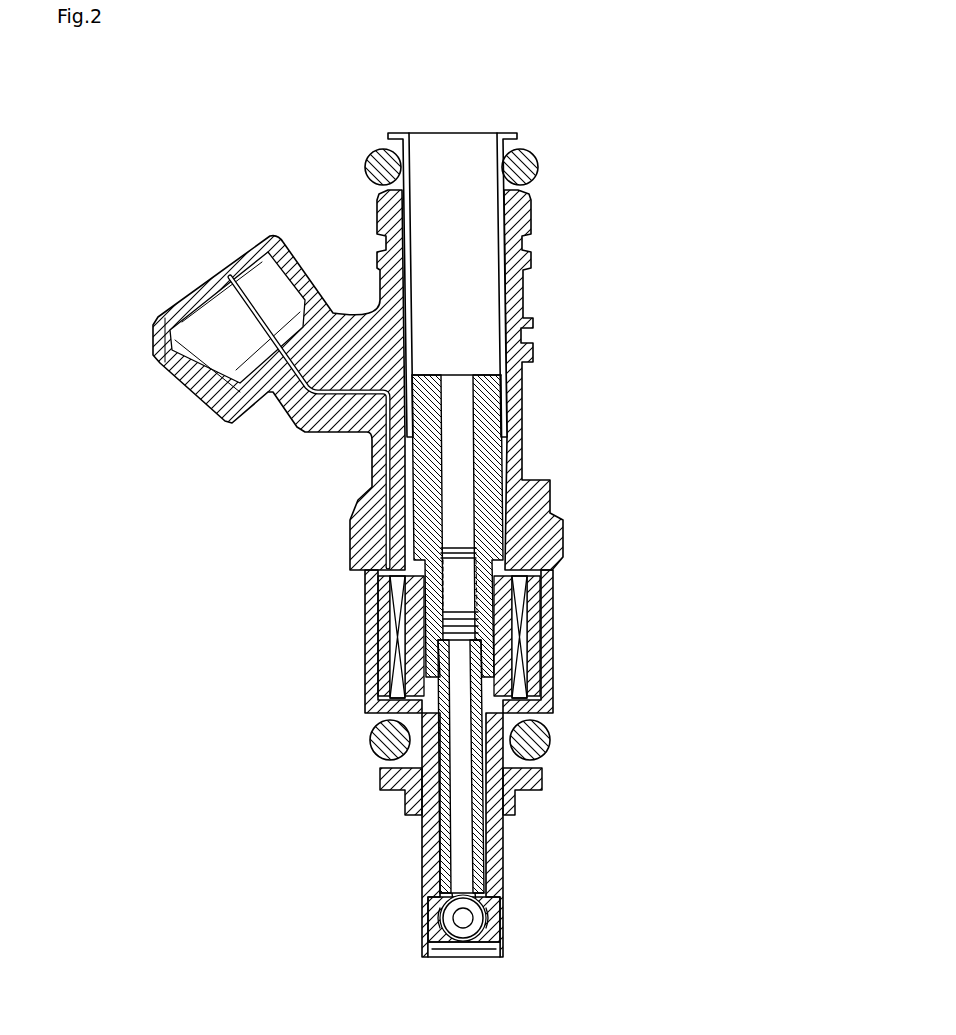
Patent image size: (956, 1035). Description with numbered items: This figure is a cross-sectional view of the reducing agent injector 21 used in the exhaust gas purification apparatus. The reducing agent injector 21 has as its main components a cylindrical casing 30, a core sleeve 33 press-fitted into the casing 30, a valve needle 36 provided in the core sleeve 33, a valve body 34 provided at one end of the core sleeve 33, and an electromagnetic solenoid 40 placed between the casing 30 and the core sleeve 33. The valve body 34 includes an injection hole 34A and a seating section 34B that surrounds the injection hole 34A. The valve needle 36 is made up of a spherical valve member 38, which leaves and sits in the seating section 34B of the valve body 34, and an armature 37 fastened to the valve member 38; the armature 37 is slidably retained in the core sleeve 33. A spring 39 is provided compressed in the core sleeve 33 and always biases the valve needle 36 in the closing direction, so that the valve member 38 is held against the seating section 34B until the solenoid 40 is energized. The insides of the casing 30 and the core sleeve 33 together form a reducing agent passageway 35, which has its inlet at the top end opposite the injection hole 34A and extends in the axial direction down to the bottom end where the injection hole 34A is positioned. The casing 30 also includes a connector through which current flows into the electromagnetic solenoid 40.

The reducing agent injector 21 is at (552, 103).
The cylindrical casing 30 is at (563, 243).
The reducing agent passageway 35 is at (490, 348).
The core sleeve 33 is at (430, 543).
The electromagnetic solenoid 40 is at (396, 662).
The spring 39 is at (440, 712).
The armature 37 is at (440, 828).
The valve needle 36 is at (491, 858).
The spherical valve member 38 is at (426, 925).
The valve body 34 is at (497, 918).
The injection hole 34A is at (450, 935).
The seating section 34B is at (457, 931).